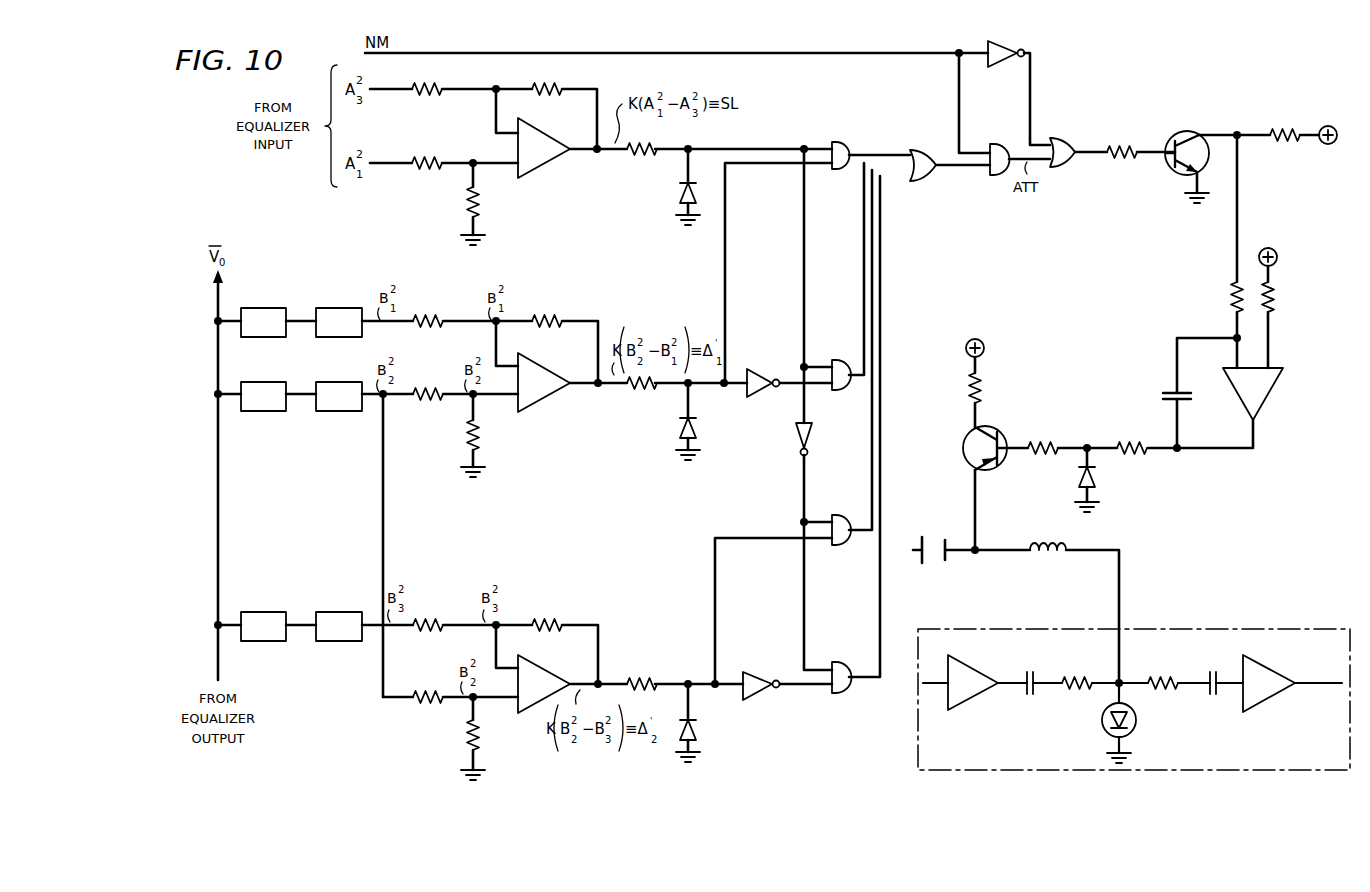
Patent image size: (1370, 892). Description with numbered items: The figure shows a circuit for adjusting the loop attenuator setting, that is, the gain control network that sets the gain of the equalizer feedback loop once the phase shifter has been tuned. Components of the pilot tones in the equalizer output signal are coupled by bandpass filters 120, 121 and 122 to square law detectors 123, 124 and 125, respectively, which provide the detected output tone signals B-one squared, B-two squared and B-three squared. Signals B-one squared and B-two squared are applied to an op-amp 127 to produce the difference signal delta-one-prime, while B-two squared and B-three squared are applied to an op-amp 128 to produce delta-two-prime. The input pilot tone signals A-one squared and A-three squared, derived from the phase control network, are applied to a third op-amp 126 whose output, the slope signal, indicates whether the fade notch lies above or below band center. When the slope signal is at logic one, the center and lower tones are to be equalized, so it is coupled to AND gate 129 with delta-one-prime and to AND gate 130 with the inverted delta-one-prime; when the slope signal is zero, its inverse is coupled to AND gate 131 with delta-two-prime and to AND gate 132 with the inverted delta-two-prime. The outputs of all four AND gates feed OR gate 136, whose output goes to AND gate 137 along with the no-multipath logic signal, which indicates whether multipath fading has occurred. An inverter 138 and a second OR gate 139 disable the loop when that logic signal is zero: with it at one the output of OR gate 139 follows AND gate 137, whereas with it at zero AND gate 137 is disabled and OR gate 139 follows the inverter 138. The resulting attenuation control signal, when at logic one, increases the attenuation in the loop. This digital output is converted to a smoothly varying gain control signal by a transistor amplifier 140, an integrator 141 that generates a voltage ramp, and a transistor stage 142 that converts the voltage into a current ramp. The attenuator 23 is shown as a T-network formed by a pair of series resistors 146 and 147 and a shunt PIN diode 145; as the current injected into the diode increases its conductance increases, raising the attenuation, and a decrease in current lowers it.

The attenuator 23 is at (1134, 686).
The bandpass filter 120 is at (262, 308).
The bandpass filter 121 is at (262, 382).
The bandpass filter 122 is at (262, 612).
The square law detector 123 is at (338, 308).
The square law detector 124 is at (338, 382).
The square law detector 125 is at (338, 612).
The op-amp 126 is at (541, 133).
The op-amp 127 is at (556, 352).
The op-amp 128 is at (556, 654).
The AND gate 129 is at (842, 140).
The AND gate 130 is at (843, 360).
The AND gate 131 is at (847, 506).
The AND gate 132 is at (847, 653).
The OR gate 136 is at (920, 150).
The AND gate 137 is at (998, 144).
The inverter 138 is at (1000, 67).
The OR gate 139 is at (1066, 138).
The transistor amplifier 140 is at (1188, 132).
The integrator 141 is at (1266, 394).
The transistor stage 142 is at (998, 428).
The shunt PIN diode 145 is at (1136, 718).
The series resistor 146 is at (1077, 669).
The series resistor 147 is at (1163, 669).